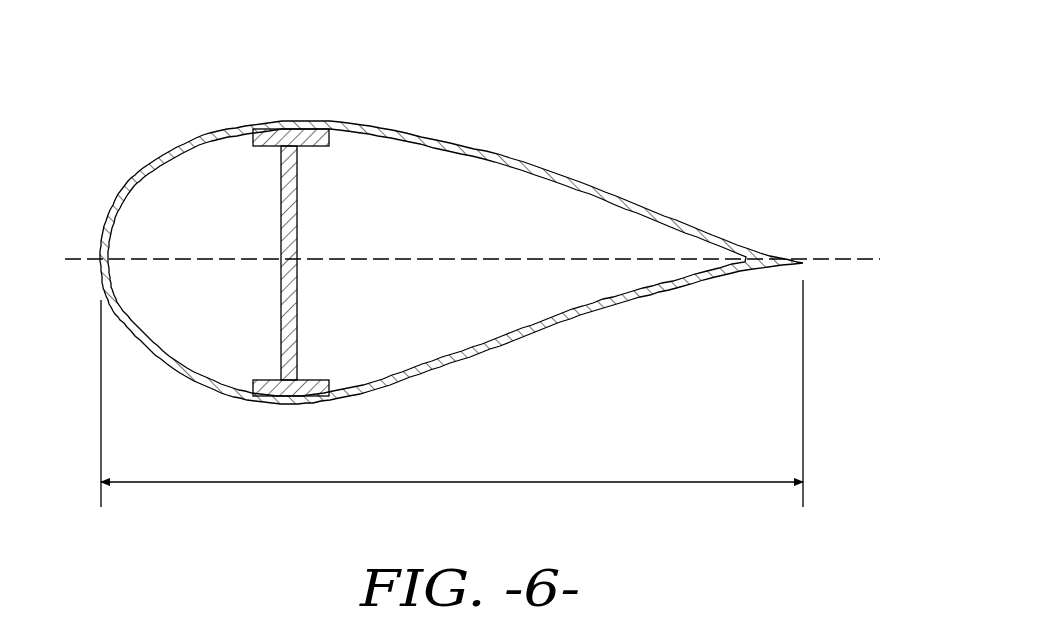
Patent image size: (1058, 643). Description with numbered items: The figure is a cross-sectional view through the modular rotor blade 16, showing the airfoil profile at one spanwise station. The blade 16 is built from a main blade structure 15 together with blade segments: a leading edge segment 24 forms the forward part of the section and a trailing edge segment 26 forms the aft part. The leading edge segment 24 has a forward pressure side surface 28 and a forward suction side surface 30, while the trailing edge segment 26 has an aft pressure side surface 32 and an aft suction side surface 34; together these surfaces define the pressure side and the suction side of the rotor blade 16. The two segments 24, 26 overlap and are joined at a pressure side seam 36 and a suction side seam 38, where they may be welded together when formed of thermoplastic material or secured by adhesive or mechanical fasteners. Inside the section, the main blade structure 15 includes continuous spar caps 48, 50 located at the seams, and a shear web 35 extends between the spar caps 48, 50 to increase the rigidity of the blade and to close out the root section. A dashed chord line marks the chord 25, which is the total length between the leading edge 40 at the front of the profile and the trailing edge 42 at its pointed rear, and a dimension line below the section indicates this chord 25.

The main blade structure 15 is at (279, 343).
The rotor blade 16 is at (688, 85).
The leading edge segment 24 is at (119, 183).
The chord 25 is at (570, 483).
The trailing edge segment 26 is at (647, 202).
The forward pressure side surface 28 is at (182, 375).
The forward suction side surface 30 is at (177, 148).
The aft pressure side surface 32 is at (517, 338).
The aft suction side surface 34 is at (510, 158).
The shear web 35 is at (281, 232).
The pressure side seam 36 is at (282, 402).
The suction side seam 38 is at (309, 129).
The leading edge 40 is at (100, 259).
The trailing edge 42 is at (803, 263).
The spar cap 48 is at (310, 380).
The spar cap 50 is at (310, 148).